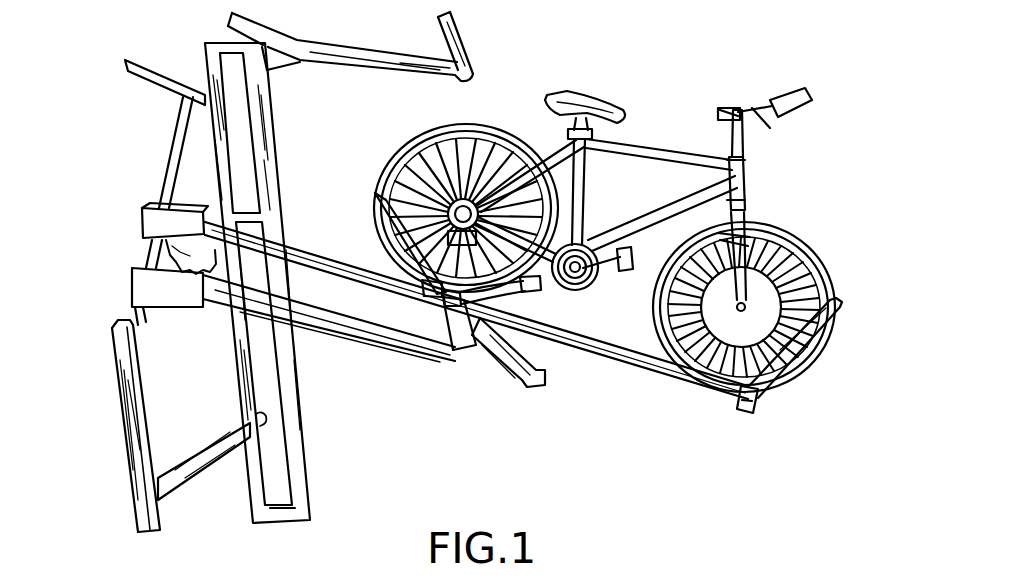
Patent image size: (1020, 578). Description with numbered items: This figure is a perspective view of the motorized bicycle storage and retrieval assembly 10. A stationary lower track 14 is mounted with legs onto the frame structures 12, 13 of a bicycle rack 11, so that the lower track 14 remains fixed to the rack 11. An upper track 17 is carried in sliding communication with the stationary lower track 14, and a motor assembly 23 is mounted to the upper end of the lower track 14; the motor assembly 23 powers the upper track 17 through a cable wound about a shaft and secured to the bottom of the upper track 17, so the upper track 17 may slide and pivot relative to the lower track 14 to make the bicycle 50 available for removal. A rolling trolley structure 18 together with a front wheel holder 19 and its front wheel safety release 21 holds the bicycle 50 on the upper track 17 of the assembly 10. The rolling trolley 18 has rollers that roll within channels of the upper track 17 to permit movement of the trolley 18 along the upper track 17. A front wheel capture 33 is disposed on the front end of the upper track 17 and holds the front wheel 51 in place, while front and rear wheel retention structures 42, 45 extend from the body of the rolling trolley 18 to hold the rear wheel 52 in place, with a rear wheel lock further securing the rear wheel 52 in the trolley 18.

The motorized bicycle storage and retrieval assembly 10 is at (383, 372).
The bicycle rack 11 is at (283, 120).
The frame structure 12 is at (143, 503).
The frame structure 13 is at (142, 290).
The stationary lower track 14 is at (185, 263).
The upper track 17 is at (630, 366).
The rolling trolley structure 18 is at (441, 300).
The front wheel holder 19 is at (740, 405).
The front wheel safety release 21 is at (755, 407).
The motor assembly 23 is at (143, 218).
The front wheel capture 33 is at (797, 378).
The front wheel retention structure 42 is at (540, 288).
The rear wheel retention structure 45 is at (388, 243).
The bicycle 50 is at (750, 180).
The front wheel 51 is at (850, 268).
The rear wheel 52 is at (490, 122).